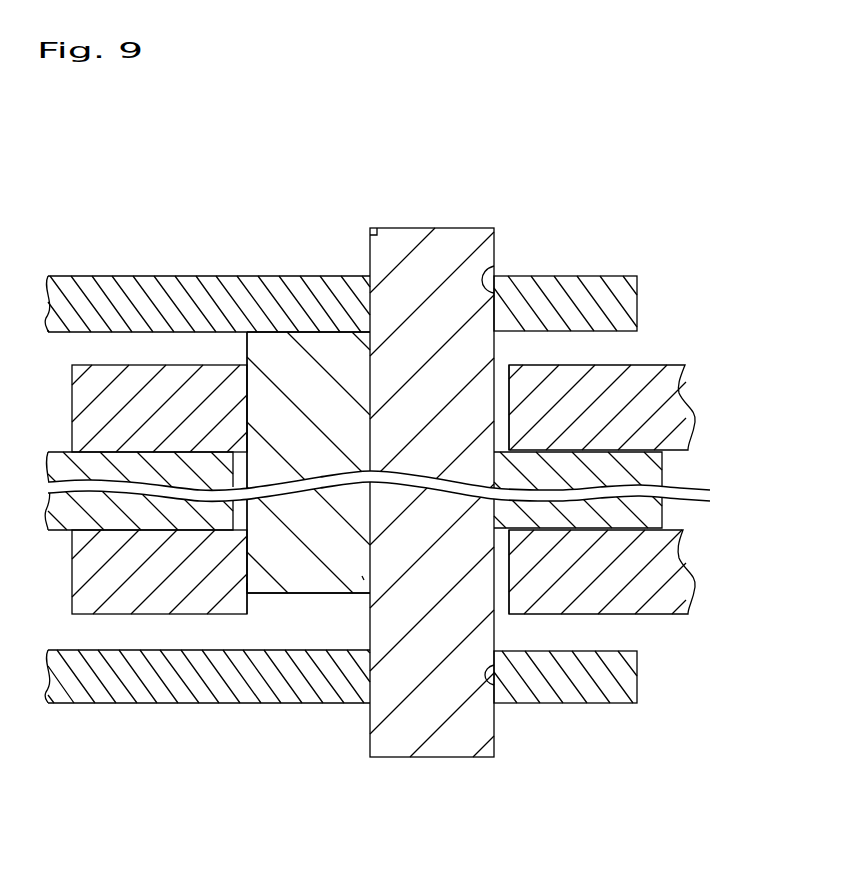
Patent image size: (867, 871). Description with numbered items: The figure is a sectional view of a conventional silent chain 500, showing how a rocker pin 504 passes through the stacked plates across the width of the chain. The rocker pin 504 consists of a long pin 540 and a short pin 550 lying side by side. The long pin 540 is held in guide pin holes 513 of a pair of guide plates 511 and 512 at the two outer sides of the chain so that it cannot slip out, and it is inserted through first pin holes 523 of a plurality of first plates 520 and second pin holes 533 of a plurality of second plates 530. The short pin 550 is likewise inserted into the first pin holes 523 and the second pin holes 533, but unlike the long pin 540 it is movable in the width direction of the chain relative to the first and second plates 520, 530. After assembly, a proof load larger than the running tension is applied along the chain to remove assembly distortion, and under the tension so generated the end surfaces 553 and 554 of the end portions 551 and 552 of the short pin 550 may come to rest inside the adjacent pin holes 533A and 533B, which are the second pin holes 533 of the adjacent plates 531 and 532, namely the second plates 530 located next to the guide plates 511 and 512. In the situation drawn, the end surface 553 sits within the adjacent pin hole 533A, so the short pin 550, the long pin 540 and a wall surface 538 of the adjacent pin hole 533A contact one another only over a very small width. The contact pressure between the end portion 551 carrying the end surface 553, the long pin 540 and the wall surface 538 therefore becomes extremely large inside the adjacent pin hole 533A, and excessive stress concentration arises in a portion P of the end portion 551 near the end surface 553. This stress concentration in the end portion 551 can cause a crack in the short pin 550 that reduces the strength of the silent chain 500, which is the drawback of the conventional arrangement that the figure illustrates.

The silent chain 500 is at (570, 101).
The rocker pin 504 is at (498, 194).
The short pin 550 is at (310, 387).
The end portion 552 is at (274, 342).
The end surface 554 is at (335, 330).
The end portion 551 is at (315, 578).
The end surface 553 is at (335, 578).
The wall surface 538 is at (249, 563).
The long pin 540 is at (445, 265).
The guide pin hole 513 is at (494, 266).
The second pin hole 533 is at (532, 509).
The adjacent pin hole 533A is at (478, 568).
The adjacent pin hole 533B is at (506, 396).
The guide plate 512 is at (613, 283).
The guide plate 511 is at (562, 705).
The first plate 520 is at (635, 464).
The first pin hole 523 is at (246, 520).
The second plate 530 is at (157, 501).
The adjacent plate 532 is at (127, 393).
The adjacent plate 531 is at (128, 600).
The portion P is at (243, 584).